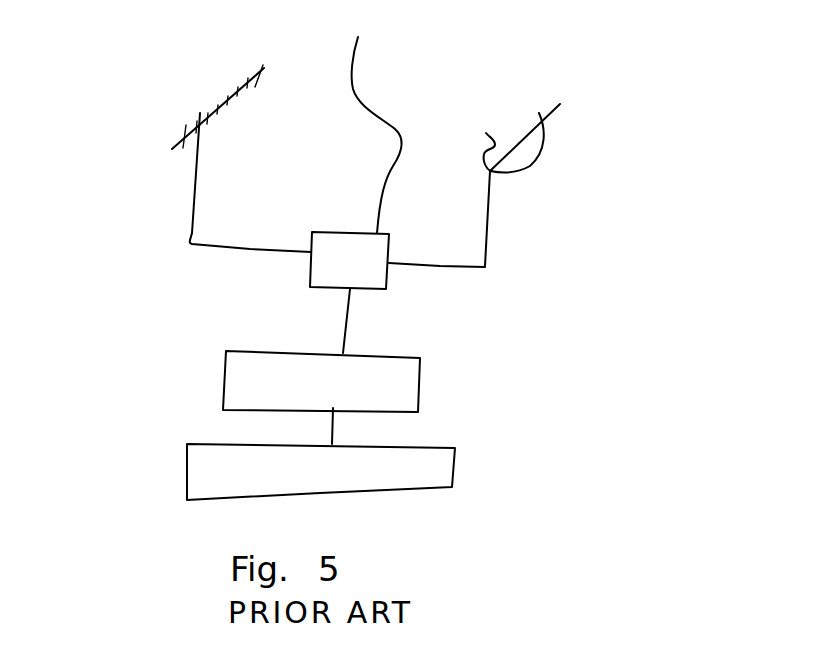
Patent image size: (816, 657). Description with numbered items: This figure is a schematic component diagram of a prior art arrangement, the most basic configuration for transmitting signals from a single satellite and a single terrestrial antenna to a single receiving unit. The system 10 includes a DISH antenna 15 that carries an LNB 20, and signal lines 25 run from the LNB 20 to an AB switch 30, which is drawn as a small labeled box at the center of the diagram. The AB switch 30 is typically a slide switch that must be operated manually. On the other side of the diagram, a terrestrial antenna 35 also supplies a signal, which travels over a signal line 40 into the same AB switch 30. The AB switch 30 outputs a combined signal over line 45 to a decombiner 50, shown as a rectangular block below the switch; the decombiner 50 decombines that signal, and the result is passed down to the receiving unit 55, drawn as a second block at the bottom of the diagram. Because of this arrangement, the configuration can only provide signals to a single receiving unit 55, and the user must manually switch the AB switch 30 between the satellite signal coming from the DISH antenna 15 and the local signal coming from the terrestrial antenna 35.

The system 10 is at (613, 165).
The DISH antenna 15 is at (560, 103).
The LNB 20 is at (486, 132).
The signal lines 25 is at (487, 248).
The AB switch 30 is at (366, 120).
The terrestrial antenna 35 is at (200, 116).
The signal line 40 is at (189, 226).
The line 45 is at (345, 322).
The decombiner 50 is at (412, 378).
The receiving unit 55 is at (457, 463).